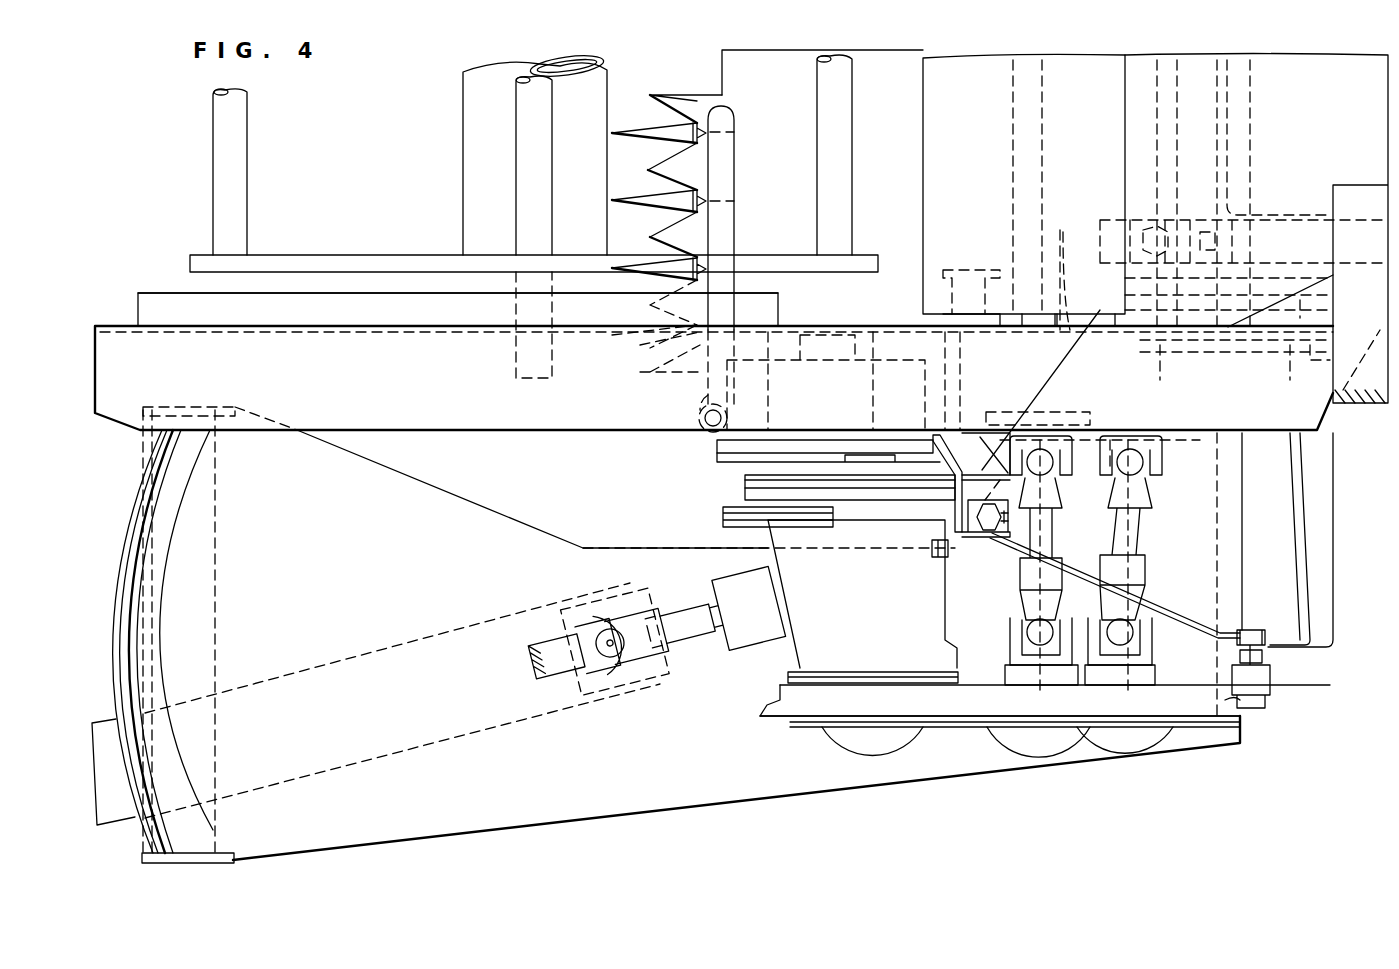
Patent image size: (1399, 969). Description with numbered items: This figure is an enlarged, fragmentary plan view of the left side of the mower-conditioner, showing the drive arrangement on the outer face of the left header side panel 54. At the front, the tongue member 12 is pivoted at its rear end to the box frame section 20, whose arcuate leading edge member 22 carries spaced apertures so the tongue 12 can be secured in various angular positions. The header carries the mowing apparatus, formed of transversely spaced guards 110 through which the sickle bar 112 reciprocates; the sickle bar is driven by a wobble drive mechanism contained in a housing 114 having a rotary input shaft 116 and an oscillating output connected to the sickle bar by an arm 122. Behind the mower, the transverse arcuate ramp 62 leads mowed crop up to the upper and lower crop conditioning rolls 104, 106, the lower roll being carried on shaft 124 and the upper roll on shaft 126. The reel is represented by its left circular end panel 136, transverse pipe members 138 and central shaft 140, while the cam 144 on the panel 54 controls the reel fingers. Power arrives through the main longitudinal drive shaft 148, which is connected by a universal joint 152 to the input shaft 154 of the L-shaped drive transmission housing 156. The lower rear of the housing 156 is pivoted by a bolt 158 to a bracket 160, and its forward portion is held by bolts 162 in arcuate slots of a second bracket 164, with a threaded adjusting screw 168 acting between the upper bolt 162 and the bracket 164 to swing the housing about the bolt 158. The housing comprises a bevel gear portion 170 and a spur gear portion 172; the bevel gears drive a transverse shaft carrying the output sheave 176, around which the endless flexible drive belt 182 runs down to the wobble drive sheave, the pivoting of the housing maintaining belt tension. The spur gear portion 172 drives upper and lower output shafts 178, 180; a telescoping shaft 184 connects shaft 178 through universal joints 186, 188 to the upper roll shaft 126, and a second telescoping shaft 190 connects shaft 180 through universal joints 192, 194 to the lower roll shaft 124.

The tongue member 12 is at (118, 815).
The box frame section 20 is at (625, 808).
The arcuate leading edge member 22 is at (126, 535).
The left side panel 54 is at (494, 420).
The transverse arcuate ramp 62 is at (745, 62).
The upper crop conditioning roll 104 is at (932, 190).
The lower crop conditioning roll 106 is at (1013, 175).
The guards 110 is at (633, 133).
The sickle bar 112 is at (685, 108).
The housing 114 is at (717, 447).
The rotary input shaft 116 is at (745, 466).
The arm 122 is at (695, 405).
The shaft 124 is at (1100, 310).
The shaft 126 is at (1068, 330).
The circular end panel 136 is at (342, 262).
The transverse pipe members 138 is at (240, 153).
The central shaft 140 is at (600, 283).
The cam 144 is at (160, 300).
The main longitudinal drive shaft 148 is at (543, 645).
The universal joint 152 is at (607, 603).
The input shaft 154 is at (722, 637).
The drive transmission housing 156 is at (798, 758).
The bolt 158 is at (1268, 700).
The bracket 160 is at (1320, 640).
The bolts 162 is at (935, 557).
The second bracket 164 is at (963, 457).
The threaded adjusting screw 168 is at (995, 532).
The bevel gear portion 170 is at (810, 637).
The spur gear portion 172 is at (960, 708).
The output sheave 176 is at (760, 518).
The upper output shaft 178 is at (1012, 670).
The lower output shaft 180 is at (1150, 670).
The endless flexible drive belt 182 is at (752, 490).
The telescoping shaft 184 is at (1052, 530).
The universal joint 186 is at (1072, 596).
The universal joint 188 is at (1066, 487).
The second telescoping shaft 190 is at (1135, 525).
The universal joint 192 is at (1165, 597).
The universal joint 194 is at (1168, 487).